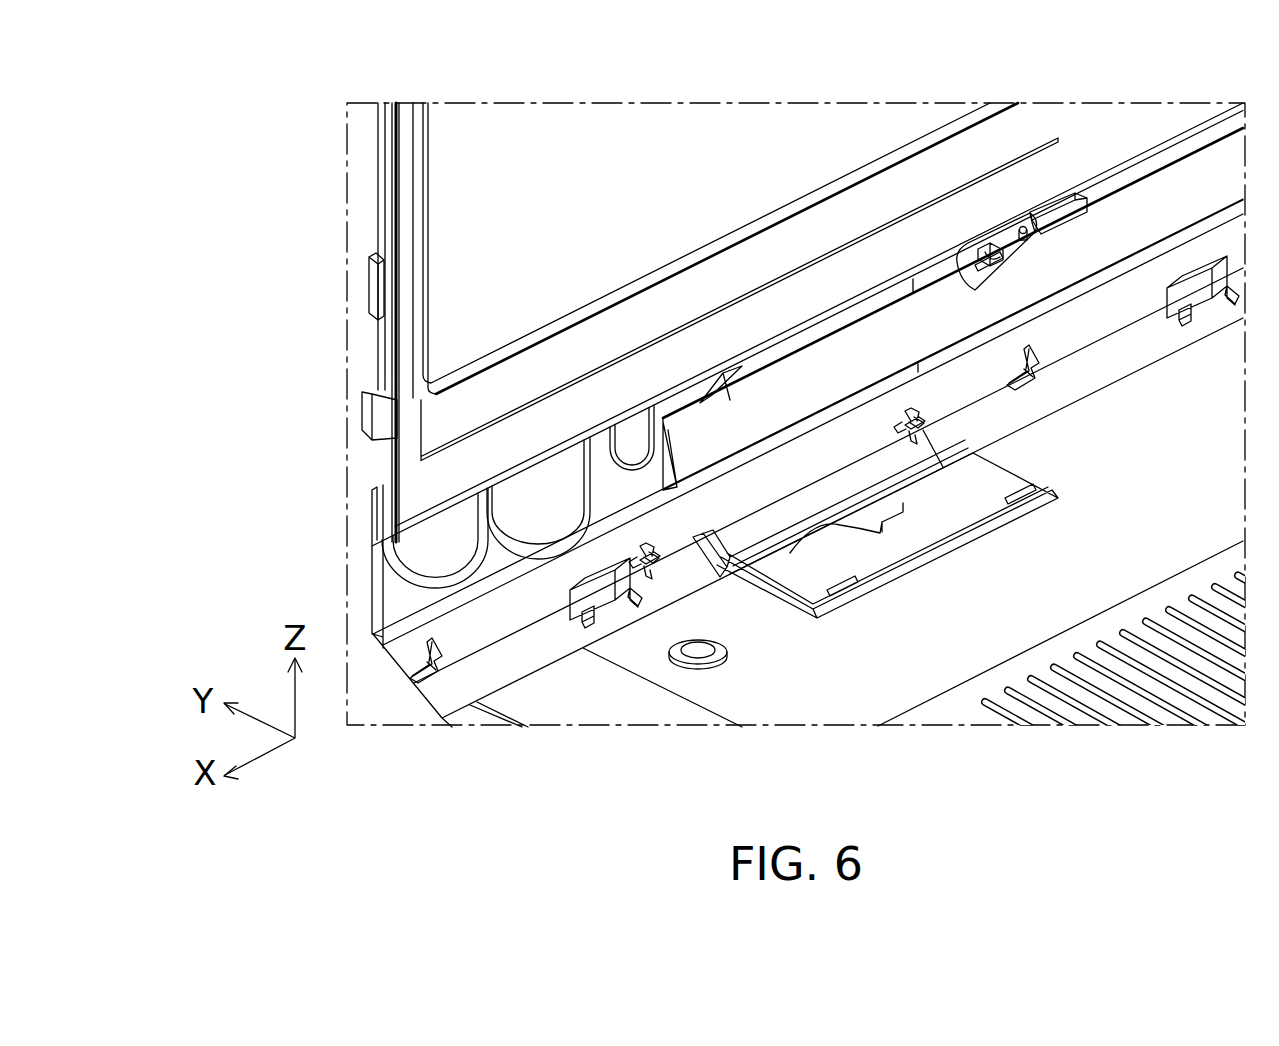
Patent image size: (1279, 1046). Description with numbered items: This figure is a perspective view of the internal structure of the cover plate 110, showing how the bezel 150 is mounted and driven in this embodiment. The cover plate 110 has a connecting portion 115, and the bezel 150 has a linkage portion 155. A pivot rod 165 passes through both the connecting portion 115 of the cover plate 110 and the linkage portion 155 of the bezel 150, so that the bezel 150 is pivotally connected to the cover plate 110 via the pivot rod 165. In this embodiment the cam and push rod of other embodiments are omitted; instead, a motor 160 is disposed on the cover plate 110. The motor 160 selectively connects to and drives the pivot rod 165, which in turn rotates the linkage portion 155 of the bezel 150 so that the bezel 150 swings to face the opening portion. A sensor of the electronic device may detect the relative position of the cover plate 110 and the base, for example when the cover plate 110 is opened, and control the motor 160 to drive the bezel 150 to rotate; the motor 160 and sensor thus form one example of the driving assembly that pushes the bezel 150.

The cover plate 110 is at (733, 277).
The connecting portion 115 is at (998, 255).
The bezel 150 is at (1202, 178).
The linkage portion 155 is at (968, 243).
The motor 160 is at (1105, 190).
The pivot rod 165 is at (1030, 236).